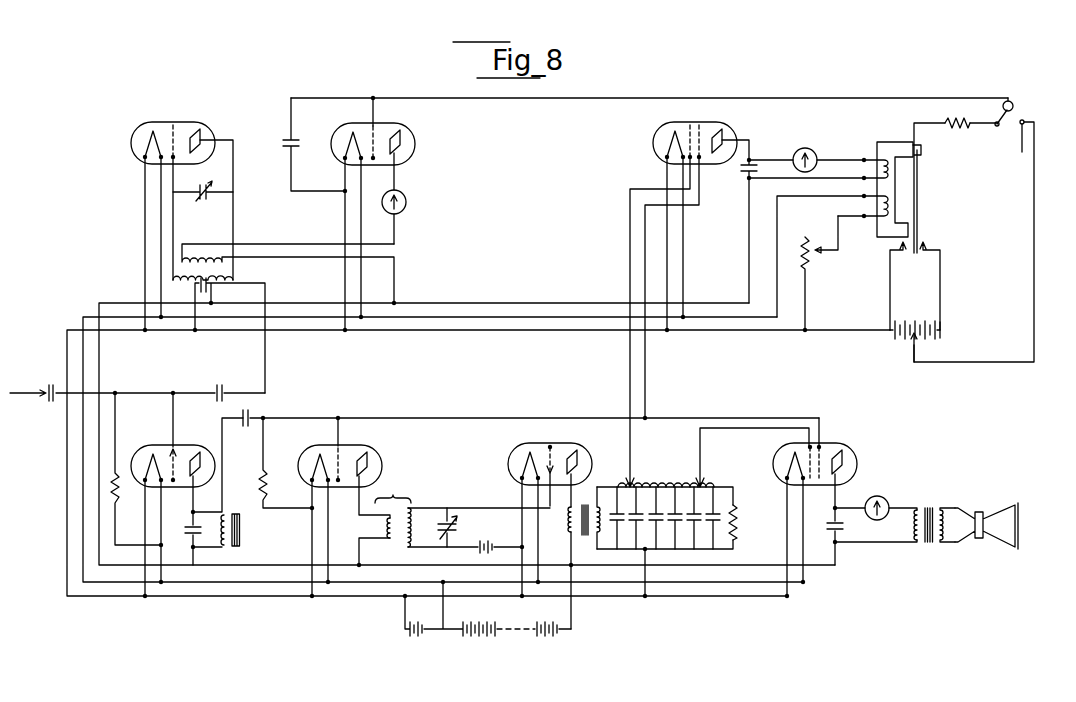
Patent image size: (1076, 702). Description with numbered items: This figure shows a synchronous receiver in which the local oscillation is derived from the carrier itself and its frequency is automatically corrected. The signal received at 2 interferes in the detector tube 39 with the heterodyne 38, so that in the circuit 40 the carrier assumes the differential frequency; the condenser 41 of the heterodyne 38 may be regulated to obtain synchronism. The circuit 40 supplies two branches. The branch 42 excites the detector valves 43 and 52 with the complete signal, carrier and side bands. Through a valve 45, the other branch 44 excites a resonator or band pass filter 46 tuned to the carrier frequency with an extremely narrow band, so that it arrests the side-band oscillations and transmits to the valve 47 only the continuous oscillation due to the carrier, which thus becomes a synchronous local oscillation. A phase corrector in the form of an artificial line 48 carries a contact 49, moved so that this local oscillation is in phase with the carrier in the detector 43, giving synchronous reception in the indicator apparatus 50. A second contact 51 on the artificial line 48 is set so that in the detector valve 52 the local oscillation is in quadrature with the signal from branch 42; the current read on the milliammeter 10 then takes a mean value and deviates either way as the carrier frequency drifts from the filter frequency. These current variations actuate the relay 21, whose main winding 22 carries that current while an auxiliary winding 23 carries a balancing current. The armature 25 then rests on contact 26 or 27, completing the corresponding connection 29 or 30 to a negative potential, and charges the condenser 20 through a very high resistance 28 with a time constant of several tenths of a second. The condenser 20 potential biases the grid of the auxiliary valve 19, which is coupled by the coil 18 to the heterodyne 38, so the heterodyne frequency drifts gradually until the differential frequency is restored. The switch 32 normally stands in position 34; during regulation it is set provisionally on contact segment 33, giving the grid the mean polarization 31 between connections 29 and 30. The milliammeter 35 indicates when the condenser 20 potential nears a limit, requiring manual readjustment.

The signal receiving point 2 is at (32, 395).
The milliammeter 10 is at (815, 151).
The coil 18 is at (182, 262).
The auxiliary valve 19 is at (406, 131).
The condenser 20 is at (294, 140).
The relay 21 is at (900, 143).
The main winding 22 is at (818, 170).
The auxiliary winding 23 is at (832, 256).
The armature 25 is at (917, 204).
The contact 26 is at (904, 252).
The contact 27 is at (924, 256).
The very high resistance 28 is at (958, 126).
The connection 29 is at (890, 333).
The connection 30 is at (942, 328).
The polarization 31 is at (916, 350).
The switch 32 is at (1014, 110).
The contact segment 33 is at (972, 241).
The normal position 34 is at (998, 130).
The milliammeter 35 is at (407, 203).
The heterodyne 38 is at (209, 128).
The detector tube 39 is at (190, 446).
The circuit 40 is at (229, 512).
The condenser of the heterodyne 41 is at (227, 218).
The branch 42 is at (528, 417).
The detector valve 43 is at (841, 447).
The branch 44 is at (338, 431).
The valve 45 is at (378, 455).
The resonator or band pass filter 46 is at (454, 520).
The valve 47 is at (606, 440).
The artificial line 48 is at (680, 514).
The contact 49 is at (703, 460).
The indicator apparatus 50 is at (990, 513).
The second contact 51 is at (633, 466).
The detector valve 52 is at (732, 130).